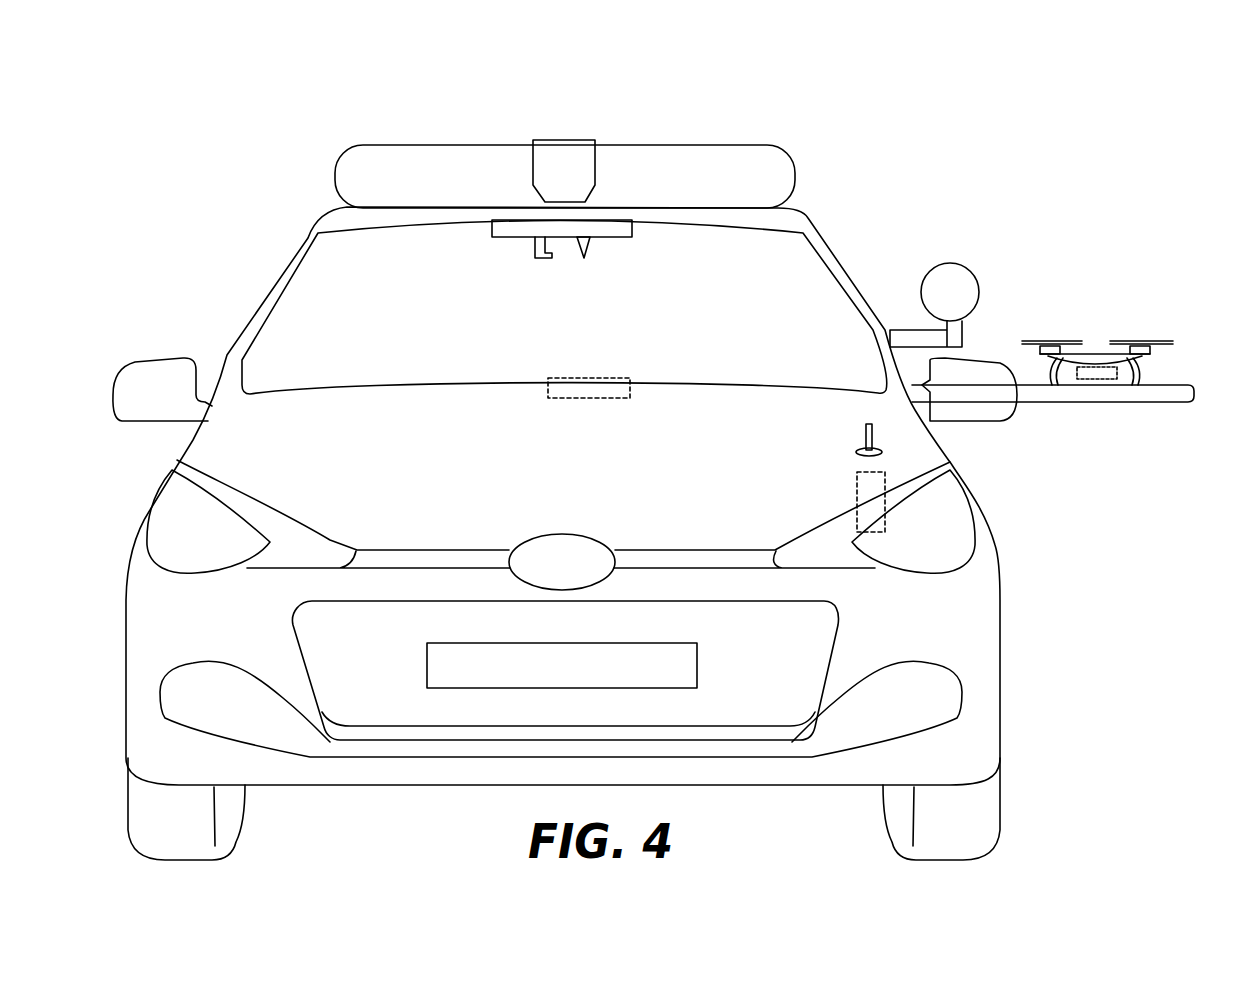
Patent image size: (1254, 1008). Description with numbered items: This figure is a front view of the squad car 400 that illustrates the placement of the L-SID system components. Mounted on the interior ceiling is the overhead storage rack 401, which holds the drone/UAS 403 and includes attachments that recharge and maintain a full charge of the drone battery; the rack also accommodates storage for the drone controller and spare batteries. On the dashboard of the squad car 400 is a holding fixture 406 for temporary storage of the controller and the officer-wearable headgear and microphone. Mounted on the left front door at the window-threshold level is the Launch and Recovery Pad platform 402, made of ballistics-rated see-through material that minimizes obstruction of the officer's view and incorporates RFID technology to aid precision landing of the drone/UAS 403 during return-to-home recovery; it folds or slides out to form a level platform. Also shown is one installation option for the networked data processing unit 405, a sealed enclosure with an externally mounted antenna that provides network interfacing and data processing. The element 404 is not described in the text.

The squad car 400 is at (655, 115).
The overhead storage rack 401 is at (489, 238).
The Launch and Recovery Pad platform 402 is at (1090, 402).
The drone/UAS 403 is at (1063, 344).
The drone payload box 404 is at (1097, 373).
The networked data processing unit 405 is at (858, 452).
The dashboard mounted holding fixture 406 is at (566, 361).